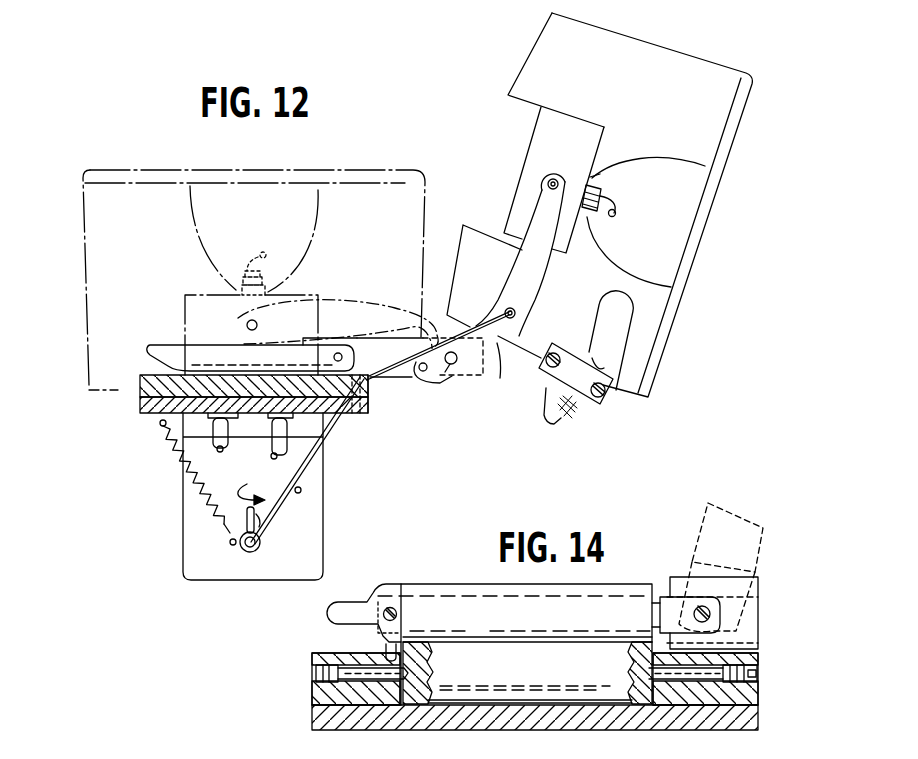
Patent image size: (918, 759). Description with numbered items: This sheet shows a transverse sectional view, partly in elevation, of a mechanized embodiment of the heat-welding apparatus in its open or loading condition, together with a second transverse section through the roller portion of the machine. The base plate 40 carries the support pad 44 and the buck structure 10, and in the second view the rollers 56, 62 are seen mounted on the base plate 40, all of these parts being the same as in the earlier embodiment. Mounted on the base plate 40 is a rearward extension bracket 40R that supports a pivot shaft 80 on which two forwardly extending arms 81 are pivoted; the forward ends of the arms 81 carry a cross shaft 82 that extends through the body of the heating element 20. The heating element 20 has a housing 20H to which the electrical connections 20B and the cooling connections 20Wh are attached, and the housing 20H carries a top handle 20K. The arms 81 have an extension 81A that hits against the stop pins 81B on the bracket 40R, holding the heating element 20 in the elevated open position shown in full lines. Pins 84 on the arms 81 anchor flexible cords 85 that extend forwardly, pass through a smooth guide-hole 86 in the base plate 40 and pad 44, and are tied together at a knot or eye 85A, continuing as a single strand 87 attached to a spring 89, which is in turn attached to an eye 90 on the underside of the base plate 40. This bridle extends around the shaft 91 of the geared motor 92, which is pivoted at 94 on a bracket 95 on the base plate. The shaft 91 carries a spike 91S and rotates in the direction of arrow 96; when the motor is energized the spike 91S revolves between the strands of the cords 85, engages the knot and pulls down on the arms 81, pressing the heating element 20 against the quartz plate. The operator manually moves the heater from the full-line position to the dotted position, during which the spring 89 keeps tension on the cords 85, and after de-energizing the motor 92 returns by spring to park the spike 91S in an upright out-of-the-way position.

In FIG. 12, the buck structure 10 is at (76, 152).
In FIG. 12, the heating element 20 is at (588, 152).
In FIG. 12, the housing 20H is at (642, 54).
In FIG. 12, the top handle 20K is at (689, 248).
In FIG. 12, the cooling connections 20Wh is at (610, 203).
In FIG. 12, the electrical connections 20B is at (573, 418).
In FIG. 12, the cross shaft 82 is at (547, 184).
In FIG. 12, the pins 84 is at (518, 316).
In FIG. 12, the flexible cords 85 is at (425, 352).
In FIG. 12, the knot (eye) 85A is at (302, 490).
In FIG. 12, the guide-hole 86 is at (358, 413).
In FIG. 12, the single strand 87 is at (260, 553).
In FIG. 12, the spring 89 is at (197, 497).
In FIG. 12, the eye 90 is at (162, 428).
In FIG. 12, the shaft 91 is at (225, 530).
In FIG. 12, the spike 91S is at (259, 514).
In FIG. 12, the geared motor 92 is at (178, 346).
In FIG. 12, the pivot 94 is at (343, 357).
In FIG. 12, the bracket 95 is at (346, 339).
In FIG. 12, the arrow 96 is at (254, 502).
In FIG. 12, the pivot shaft 80 is at (455, 365).
In FIG. 12, the arms 81 is at (490, 343).
In FIG. 12, the extension 81A is at (422, 373).
In FIG. 12, the stop pins 81B is at (446, 372).
In FIG. 12, the base plate 40 is at (146, 413).
In FIG. 14, the base plate 40 is at (322, 714).
In FIG. 12, the rearward extension bracket 40R is at (414, 390).
In FIG. 12, the support pad 44 is at (141, 383).
In FIG. 14, the support pad 44 is at (322, 656).
In FIG. 14, the roller 56 is at (620, 586).
In FIG. 14, the roller 62 is at (612, 673).